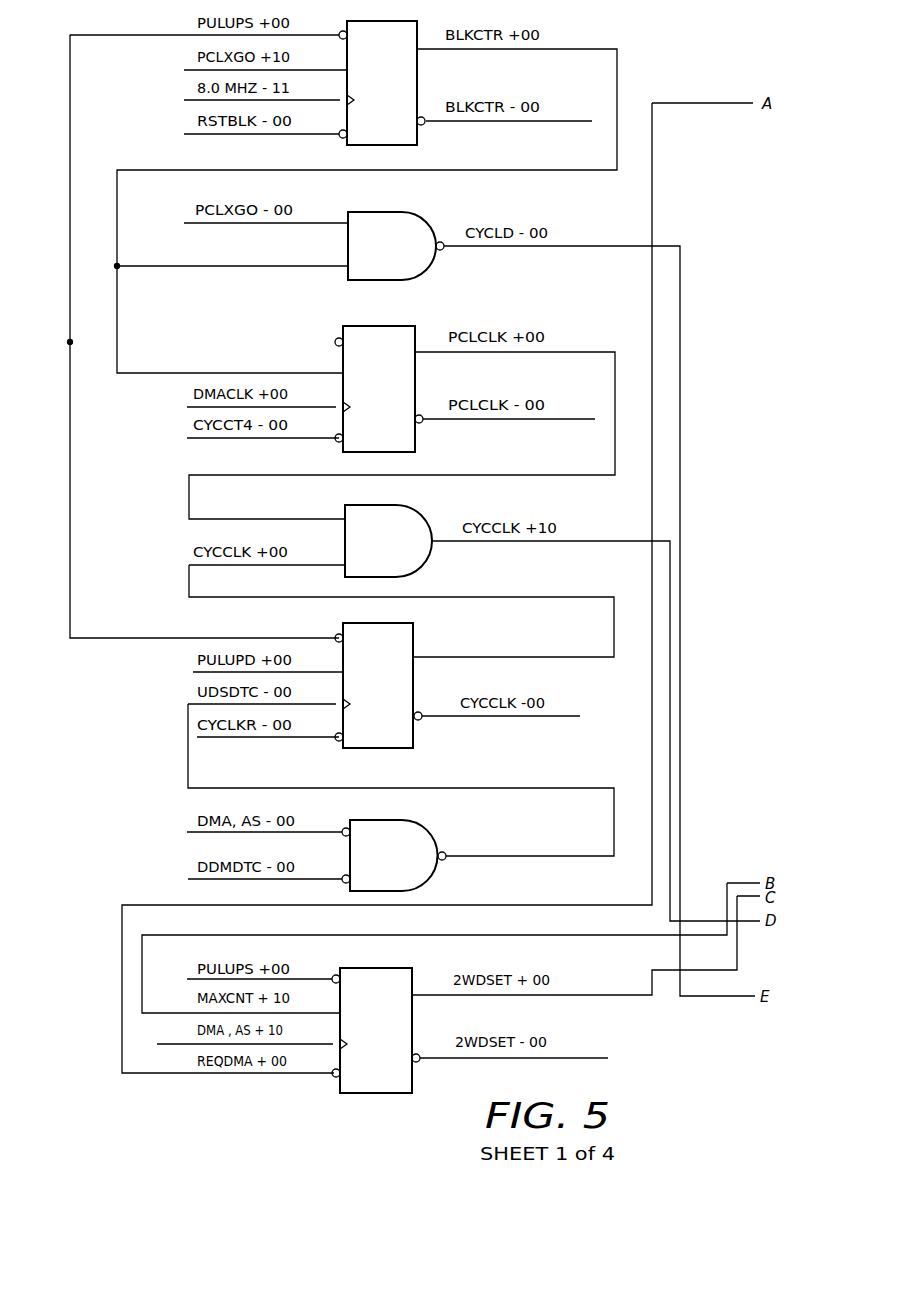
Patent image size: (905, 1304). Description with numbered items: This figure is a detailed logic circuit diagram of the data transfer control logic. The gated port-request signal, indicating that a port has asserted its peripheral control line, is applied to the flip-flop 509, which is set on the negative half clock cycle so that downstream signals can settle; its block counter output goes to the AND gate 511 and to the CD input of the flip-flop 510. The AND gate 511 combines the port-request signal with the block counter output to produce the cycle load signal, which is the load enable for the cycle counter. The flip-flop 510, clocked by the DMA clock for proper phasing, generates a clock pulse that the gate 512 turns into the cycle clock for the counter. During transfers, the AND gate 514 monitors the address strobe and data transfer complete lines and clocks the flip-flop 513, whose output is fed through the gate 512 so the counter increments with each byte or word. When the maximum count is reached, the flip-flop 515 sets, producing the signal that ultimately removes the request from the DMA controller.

The flip-flop 509 is at (400, 21).
The flip-flop 510 is at (404, 326).
The AND gate 511 is at (411, 212).
The gate 512 is at (410, 505).
The flip-flop 513 is at (405, 623).
The AND gate 514 is at (412, 820).
The flip-flop 515 is at (402, 968).